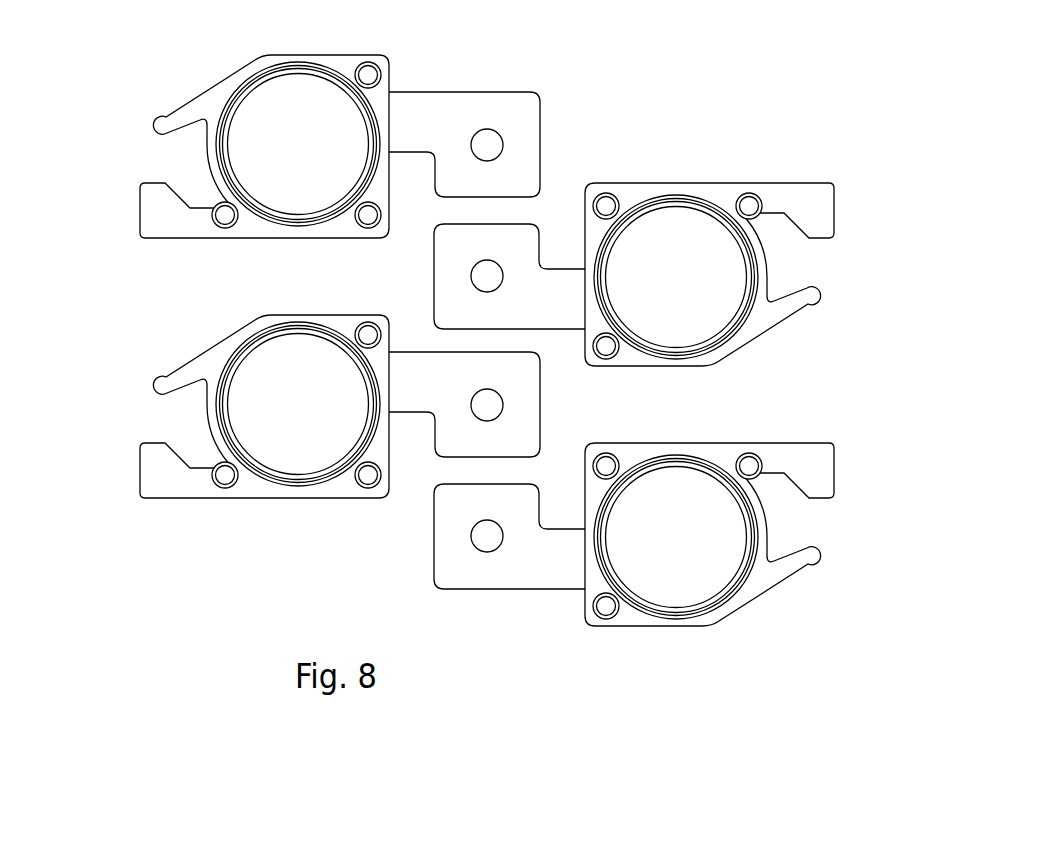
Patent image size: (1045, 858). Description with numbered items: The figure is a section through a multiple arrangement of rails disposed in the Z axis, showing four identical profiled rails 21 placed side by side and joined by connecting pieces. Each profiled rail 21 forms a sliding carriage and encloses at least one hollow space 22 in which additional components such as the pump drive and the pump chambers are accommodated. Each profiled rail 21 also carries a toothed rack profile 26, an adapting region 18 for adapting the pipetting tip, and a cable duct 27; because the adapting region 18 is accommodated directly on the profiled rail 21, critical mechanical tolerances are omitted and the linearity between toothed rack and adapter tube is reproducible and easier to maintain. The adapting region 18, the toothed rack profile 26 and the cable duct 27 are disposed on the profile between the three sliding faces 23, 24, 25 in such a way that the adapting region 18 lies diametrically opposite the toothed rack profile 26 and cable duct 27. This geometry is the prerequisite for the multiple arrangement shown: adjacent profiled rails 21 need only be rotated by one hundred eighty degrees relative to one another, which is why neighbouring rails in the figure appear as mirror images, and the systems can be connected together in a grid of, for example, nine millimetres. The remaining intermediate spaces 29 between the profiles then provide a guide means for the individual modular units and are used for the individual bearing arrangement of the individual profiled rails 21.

The adapting region 18 is at (477, 102).
The profiled rail 21 is at (389, 82).
The hollow space 22 is at (487, 340).
The sliding face 23 is at (190, 102).
The sliding face 24 is at (322, 239).
The sliding face 25 is at (583, 212).
The toothed rack profile 26 is at (140, 212).
The cable duct 27 is at (168, 160).
The intermediate space 29 is at (436, 347).